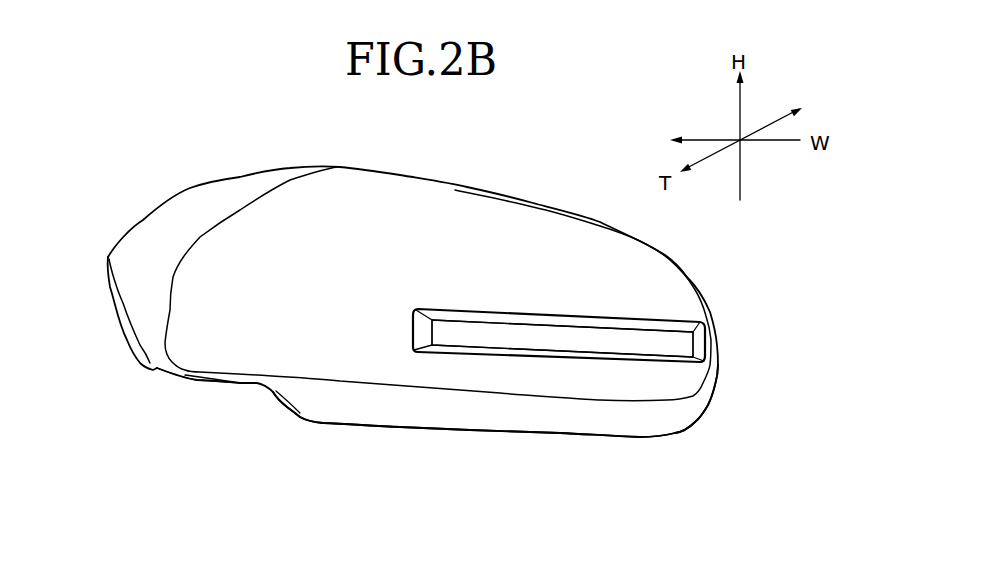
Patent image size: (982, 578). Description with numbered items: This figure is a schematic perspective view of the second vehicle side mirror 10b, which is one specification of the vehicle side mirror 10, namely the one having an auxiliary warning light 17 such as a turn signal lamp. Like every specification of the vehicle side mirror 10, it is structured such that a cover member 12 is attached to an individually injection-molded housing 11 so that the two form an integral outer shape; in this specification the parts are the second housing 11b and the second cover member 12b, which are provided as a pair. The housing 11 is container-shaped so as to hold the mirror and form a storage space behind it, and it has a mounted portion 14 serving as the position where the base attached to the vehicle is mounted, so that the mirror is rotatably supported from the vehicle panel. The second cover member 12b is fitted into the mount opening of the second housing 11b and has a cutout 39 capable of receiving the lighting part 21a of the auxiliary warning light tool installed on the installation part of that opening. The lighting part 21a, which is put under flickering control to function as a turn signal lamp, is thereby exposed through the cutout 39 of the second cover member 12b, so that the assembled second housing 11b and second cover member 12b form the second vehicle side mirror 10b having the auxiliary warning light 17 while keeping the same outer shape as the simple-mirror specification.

The second vehicle side mirror 10b is at (137, 207).
The vehicle side mirror 10 is at (381, 274).
The second cover member 12b is at (572, 247).
The cover member 12 is at (438, 243).
The auxiliary warning light 17 is at (656, 345).
The lighting part 21a is at (626, 335).
The cutout 39 is at (517, 313).
The second housing 11b is at (590, 427).
The housing 11 is at (495, 435).
The mounted portion 14 is at (208, 382).